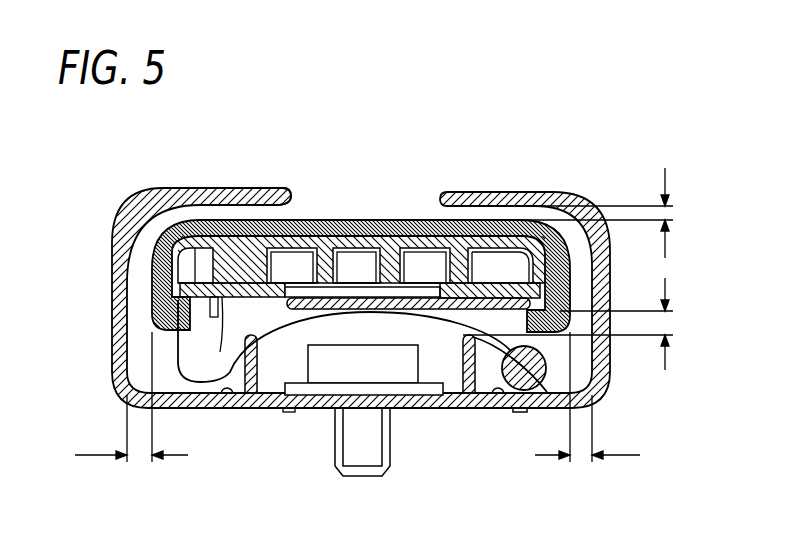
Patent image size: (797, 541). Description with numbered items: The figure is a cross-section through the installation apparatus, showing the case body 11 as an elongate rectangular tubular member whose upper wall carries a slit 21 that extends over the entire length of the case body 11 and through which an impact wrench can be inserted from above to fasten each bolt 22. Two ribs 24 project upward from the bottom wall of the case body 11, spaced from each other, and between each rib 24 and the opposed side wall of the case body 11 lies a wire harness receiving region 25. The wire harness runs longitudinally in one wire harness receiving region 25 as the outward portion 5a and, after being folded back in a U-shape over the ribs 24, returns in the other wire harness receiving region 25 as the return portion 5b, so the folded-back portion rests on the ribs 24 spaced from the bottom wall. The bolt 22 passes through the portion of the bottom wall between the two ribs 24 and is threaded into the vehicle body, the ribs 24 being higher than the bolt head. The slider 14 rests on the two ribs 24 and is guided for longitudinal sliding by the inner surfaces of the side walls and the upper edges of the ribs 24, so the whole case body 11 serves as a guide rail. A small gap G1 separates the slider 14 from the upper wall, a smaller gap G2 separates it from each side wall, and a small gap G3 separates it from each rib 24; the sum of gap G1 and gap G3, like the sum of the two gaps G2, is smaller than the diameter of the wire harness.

The case body 11 is at (104, 241).
The slit 21 is at (294, 194).
The slider 14 is at (372, 214).
The outward portion 5a is at (523, 412).
The return portion 5b is at (190, 350).
The bolt 22 is at (365, 450).
The rib 24 is at (257, 357).
The wire harness receiving region 25 is at (230, 396).
The gap G1 is at (608, 210).
The gap G2 is at (357, 410).
The gap G3 is at (580, 332).